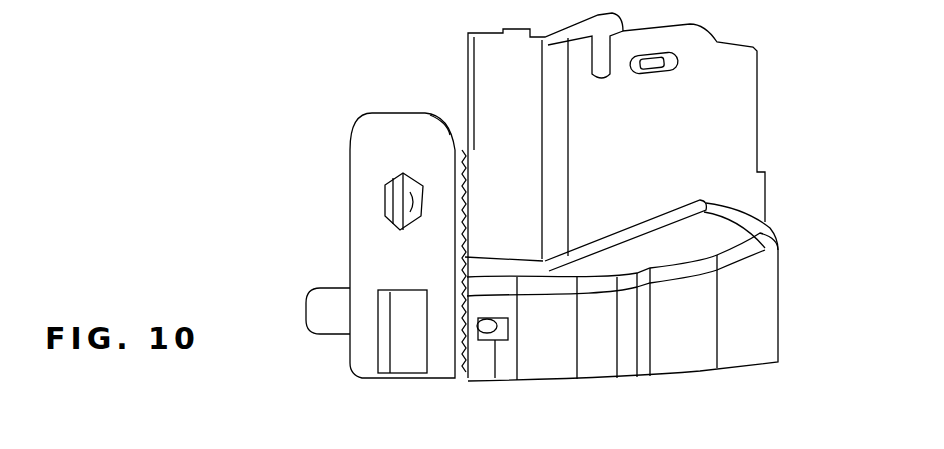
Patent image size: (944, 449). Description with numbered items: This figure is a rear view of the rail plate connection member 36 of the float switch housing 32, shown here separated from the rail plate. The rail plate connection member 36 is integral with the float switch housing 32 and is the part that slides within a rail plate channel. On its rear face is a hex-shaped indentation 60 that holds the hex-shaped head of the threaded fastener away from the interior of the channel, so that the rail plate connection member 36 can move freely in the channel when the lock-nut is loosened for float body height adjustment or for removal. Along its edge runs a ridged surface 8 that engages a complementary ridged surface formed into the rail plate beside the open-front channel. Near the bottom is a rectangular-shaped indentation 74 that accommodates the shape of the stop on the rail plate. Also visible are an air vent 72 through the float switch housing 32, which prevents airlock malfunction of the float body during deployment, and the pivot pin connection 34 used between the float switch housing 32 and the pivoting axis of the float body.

The ridged surface 8 is at (465, 354).
The float switch housing 32 is at (718, 175).
The pivot pin connection 34 is at (328, 303).
The rail plate connection member 36 is at (411, 130).
The hex-shaped indentation 60 is at (398, 204).
The air vent 72 is at (492, 312).
The rectangular-shaped indentation 74 is at (402, 340).